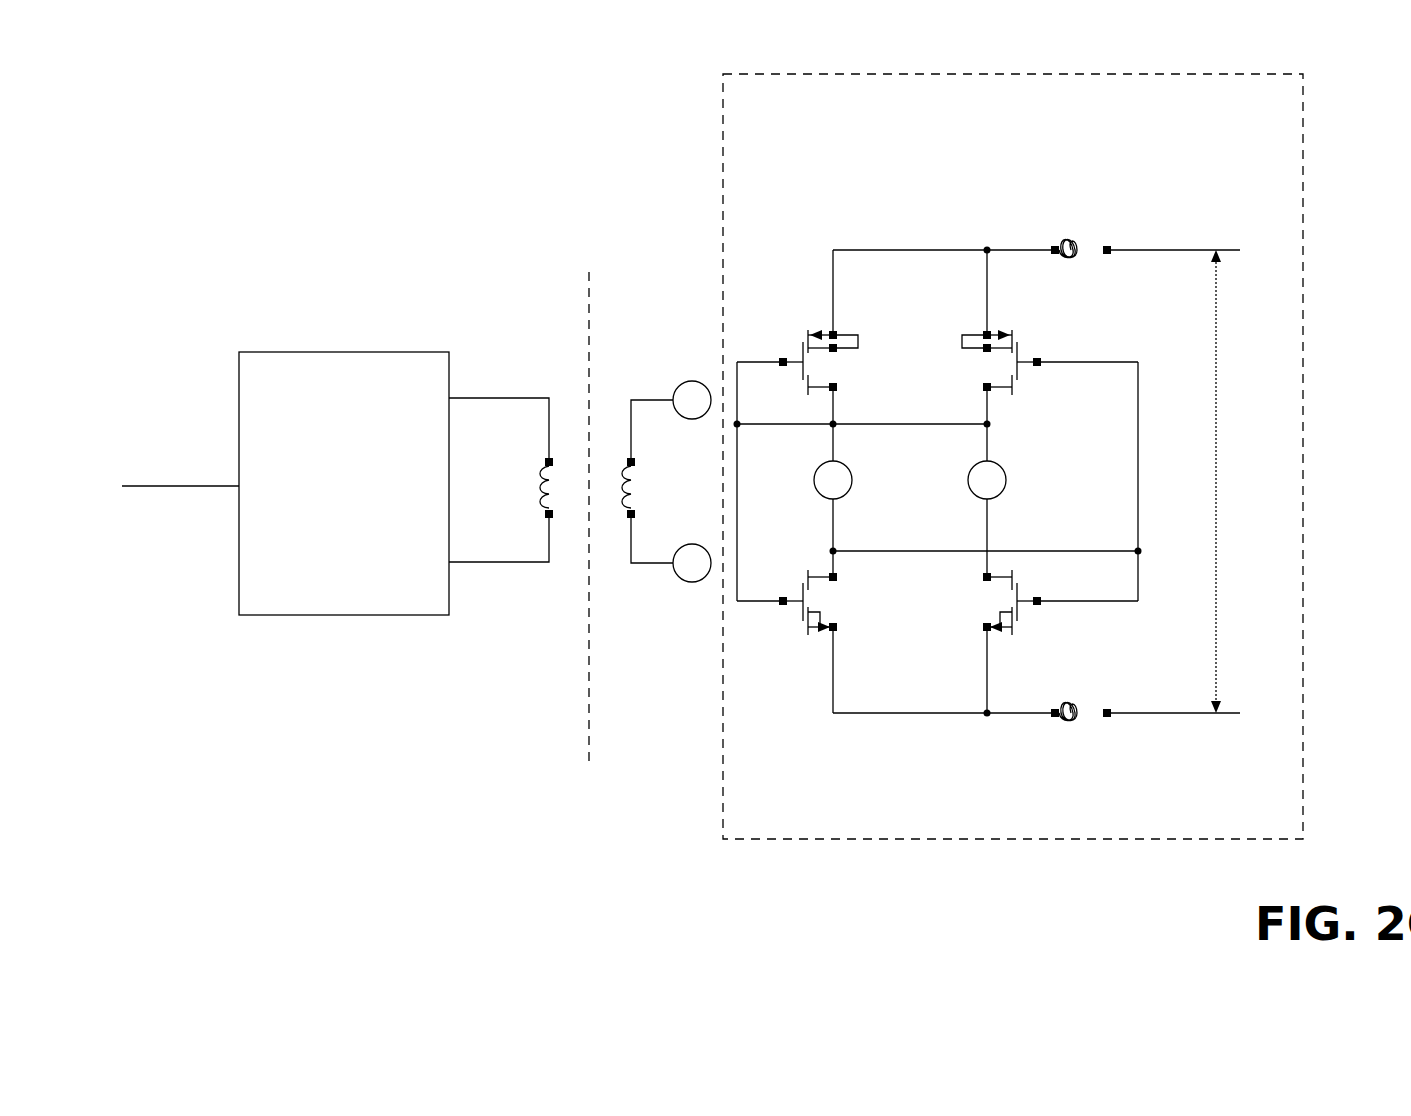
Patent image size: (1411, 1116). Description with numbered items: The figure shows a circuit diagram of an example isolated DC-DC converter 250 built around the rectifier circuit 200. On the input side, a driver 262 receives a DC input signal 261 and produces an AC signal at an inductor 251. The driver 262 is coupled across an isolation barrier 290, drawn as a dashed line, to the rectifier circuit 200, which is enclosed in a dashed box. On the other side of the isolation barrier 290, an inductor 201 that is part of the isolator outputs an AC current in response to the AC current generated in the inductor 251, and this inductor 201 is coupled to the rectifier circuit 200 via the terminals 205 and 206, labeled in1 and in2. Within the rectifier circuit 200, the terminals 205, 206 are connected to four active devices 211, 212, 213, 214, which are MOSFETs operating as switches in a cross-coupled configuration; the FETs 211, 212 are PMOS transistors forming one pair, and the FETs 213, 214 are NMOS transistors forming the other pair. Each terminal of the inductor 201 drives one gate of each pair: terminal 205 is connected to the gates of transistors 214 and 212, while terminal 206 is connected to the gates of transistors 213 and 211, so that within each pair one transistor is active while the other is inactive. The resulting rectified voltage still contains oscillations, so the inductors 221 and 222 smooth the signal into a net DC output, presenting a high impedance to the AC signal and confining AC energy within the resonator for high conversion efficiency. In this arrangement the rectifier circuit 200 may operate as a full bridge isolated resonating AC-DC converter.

The power supply system 250 is at (158, 47).
The rectifier circuit 200 is at (723, 81).
The isolation barrier 290 is at (606, 264).
The DC input signal 261 is at (186, 446).
The driver 262 is at (361, 480).
The inductor 251 is at (501, 480).
The inductor 201 is at (652, 481).
The terminal 205 is at (681, 384).
The terminal 206 is at (681, 578).
The active device 211 is at (795, 337).
The active device 212 is at (1060, 337).
The active device 213 is at (883, 609).
The active device 214 is at (978, 609).
The inductor 221 is at (1087, 230).
The inductor 222 is at (1087, 693).